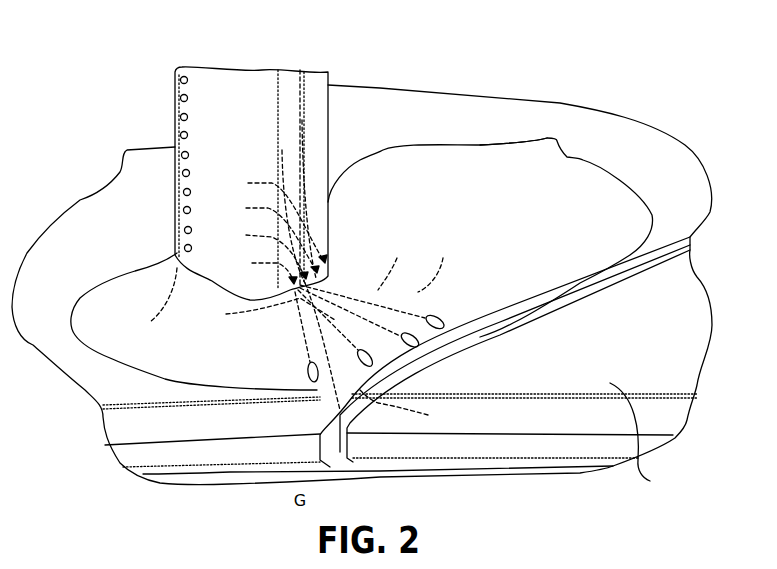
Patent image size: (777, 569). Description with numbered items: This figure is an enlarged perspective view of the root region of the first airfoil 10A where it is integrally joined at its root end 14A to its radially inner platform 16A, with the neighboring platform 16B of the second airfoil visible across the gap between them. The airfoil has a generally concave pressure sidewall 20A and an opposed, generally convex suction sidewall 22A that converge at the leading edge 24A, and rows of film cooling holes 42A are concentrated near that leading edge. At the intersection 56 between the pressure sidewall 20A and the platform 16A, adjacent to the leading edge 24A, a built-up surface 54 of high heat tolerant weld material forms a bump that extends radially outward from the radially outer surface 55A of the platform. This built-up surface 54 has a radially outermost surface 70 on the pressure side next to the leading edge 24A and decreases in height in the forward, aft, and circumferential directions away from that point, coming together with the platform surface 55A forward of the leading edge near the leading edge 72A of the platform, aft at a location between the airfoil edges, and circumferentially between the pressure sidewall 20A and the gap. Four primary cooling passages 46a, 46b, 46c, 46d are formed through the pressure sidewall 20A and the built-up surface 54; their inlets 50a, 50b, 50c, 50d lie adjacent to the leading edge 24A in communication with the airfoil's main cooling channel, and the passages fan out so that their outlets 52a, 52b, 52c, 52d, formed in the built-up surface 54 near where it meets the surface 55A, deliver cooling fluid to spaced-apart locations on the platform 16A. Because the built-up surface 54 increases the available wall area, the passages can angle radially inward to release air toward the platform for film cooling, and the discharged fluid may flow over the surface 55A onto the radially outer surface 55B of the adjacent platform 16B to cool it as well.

The first airfoil 10A is at (172, 189).
The root end 14A is at (594, 143).
The platform 16A is at (110, 423).
The platform 16B is at (690, 421).
The pressure sidewall 20A is at (351, 99).
The suction sidewall 22A is at (176, 72).
The leading edge 24A is at (285, 80).
The film cooling holes 42A is at (182, 135).
The first primary cooling passage 46a is at (242, 296).
The second primary cooling passage 46b is at (412, 406).
The third primary cooling passage 46c is at (358, 288).
The fourth primary cooling passage 46d is at (380, 278).
The inlet 50a is at (254, 269).
The inlet 50b is at (256, 252).
The inlet 50c is at (262, 236).
The inlet 50d is at (266, 218).
The outlet 52a is at (316, 382).
The outlet 52b is at (375, 363).
The outlet 52c is at (490, 337).
The outlet 52d is at (441, 320).
The built-up surface 54 is at (575, 213).
The radially outer surface 55A is at (100, 374).
The radially outer surface 55B is at (650, 481).
The intersection 56 is at (266, 333).
The radially outermost surface 70 is at (337, 312).
The leading edge of the platform 72A is at (200, 457).